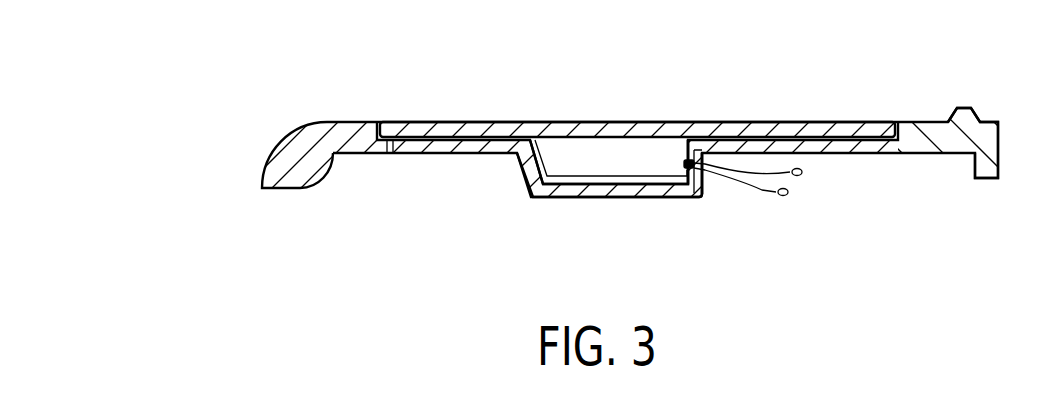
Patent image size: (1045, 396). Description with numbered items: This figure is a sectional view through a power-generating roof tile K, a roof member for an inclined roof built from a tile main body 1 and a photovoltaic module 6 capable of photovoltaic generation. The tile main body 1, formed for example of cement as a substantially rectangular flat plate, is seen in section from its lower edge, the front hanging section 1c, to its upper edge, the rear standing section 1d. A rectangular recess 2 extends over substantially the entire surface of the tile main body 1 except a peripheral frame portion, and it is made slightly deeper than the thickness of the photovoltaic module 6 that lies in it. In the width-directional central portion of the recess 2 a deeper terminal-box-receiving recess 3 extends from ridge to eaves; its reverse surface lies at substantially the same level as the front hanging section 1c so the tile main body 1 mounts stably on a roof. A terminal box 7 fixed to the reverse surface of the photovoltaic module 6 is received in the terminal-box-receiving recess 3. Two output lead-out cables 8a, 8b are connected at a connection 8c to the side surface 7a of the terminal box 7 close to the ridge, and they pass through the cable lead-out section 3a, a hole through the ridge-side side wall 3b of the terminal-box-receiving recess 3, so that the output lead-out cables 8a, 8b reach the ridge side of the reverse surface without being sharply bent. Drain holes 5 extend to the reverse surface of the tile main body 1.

The power-generating roof tile K is at (424, 99).
The tile main body 1 is at (930, 153).
The front hanging section 1c is at (282, 148).
The rear standing section 1d is at (963, 104).
The recess 2 is at (820, 122).
The terminal-box-receiving recess 3 is at (610, 198).
The cable lead-out section 3a is at (690, 198).
The ridge-side side wall 3b is at (703, 182).
The drain holes 5 is at (393, 153).
The photovoltaic module 6 is at (702, 120).
The terminal box 7 is at (583, 147).
The side surface 7a is at (690, 150).
The output lead-out cable 8a is at (801, 176).
The output lead-out cable 8b is at (765, 193).
The connection 8c is at (686, 166).